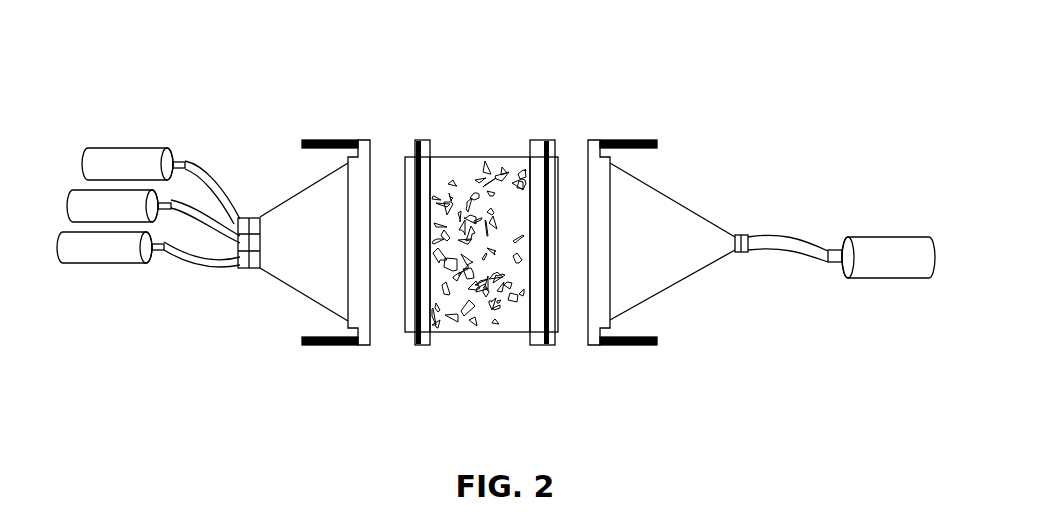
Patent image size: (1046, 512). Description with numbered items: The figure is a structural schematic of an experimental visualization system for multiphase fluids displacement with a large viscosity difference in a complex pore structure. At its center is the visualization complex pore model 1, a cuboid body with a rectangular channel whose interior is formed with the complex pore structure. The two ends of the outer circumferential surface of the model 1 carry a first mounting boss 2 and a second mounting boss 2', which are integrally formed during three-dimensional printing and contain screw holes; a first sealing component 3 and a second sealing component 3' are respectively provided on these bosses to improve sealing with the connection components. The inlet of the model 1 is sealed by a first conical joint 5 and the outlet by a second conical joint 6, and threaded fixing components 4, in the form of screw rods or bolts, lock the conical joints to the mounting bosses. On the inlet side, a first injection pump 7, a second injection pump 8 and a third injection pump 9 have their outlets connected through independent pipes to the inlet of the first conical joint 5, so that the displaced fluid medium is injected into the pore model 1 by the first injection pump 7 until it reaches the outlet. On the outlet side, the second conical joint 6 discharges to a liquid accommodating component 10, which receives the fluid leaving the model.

The visualization complex pore model 1 is at (482, 157).
The first mounting boss 2 is at (424, 289).
The second mounting boss 2' is at (542, 289).
The first sealing component 3 is at (417, 202).
The second sealing component 3' is at (547, 202).
The threaded fixing component 4 is at (327, 140).
The first conical joint 5 is at (277, 203).
The second conical joint 6 is at (693, 212).
The first injection pump 7 is at (128, 148).
The second injection pump 8 is at (70, 190).
The third injection pump 9 is at (105, 263).
The liquid accommodating component 10 is at (887, 278).